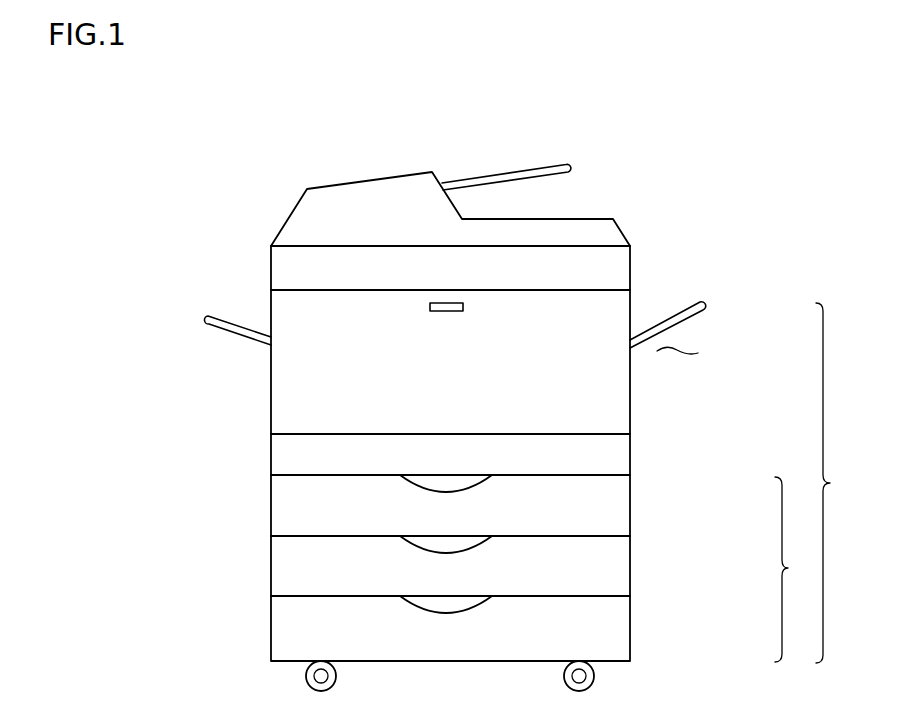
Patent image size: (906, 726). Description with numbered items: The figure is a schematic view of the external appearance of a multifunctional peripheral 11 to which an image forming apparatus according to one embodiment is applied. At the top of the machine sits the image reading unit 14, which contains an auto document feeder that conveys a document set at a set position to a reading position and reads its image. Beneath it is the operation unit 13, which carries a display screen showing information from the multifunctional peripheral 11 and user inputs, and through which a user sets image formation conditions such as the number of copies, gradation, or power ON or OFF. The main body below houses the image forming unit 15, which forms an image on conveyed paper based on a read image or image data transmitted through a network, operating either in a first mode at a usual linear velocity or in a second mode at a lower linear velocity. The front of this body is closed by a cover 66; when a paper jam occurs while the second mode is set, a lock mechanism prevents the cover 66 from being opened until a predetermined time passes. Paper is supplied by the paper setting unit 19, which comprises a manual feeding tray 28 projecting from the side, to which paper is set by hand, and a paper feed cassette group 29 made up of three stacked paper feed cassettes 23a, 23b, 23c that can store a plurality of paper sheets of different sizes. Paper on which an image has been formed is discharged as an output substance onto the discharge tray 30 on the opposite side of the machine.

The multifunctional peripheral 11 is at (683, 152).
The operation unit 13 is at (643, 263).
The image reading unit 14 is at (635, 213).
The image forming unit 15 is at (255, 413).
The cover 66 is at (290, 384).
The discharge tray 30 is at (218, 342).
The manual feeding tray 28 is at (697, 332).
The paper feed cassette 23a is at (642, 503).
The paper feed cassette 23b is at (642, 560).
The paper feed cassette 23c is at (642, 626).
The paper feed cassette group 29 is at (795, 569).
The paper setting unit 19 is at (840, 483).